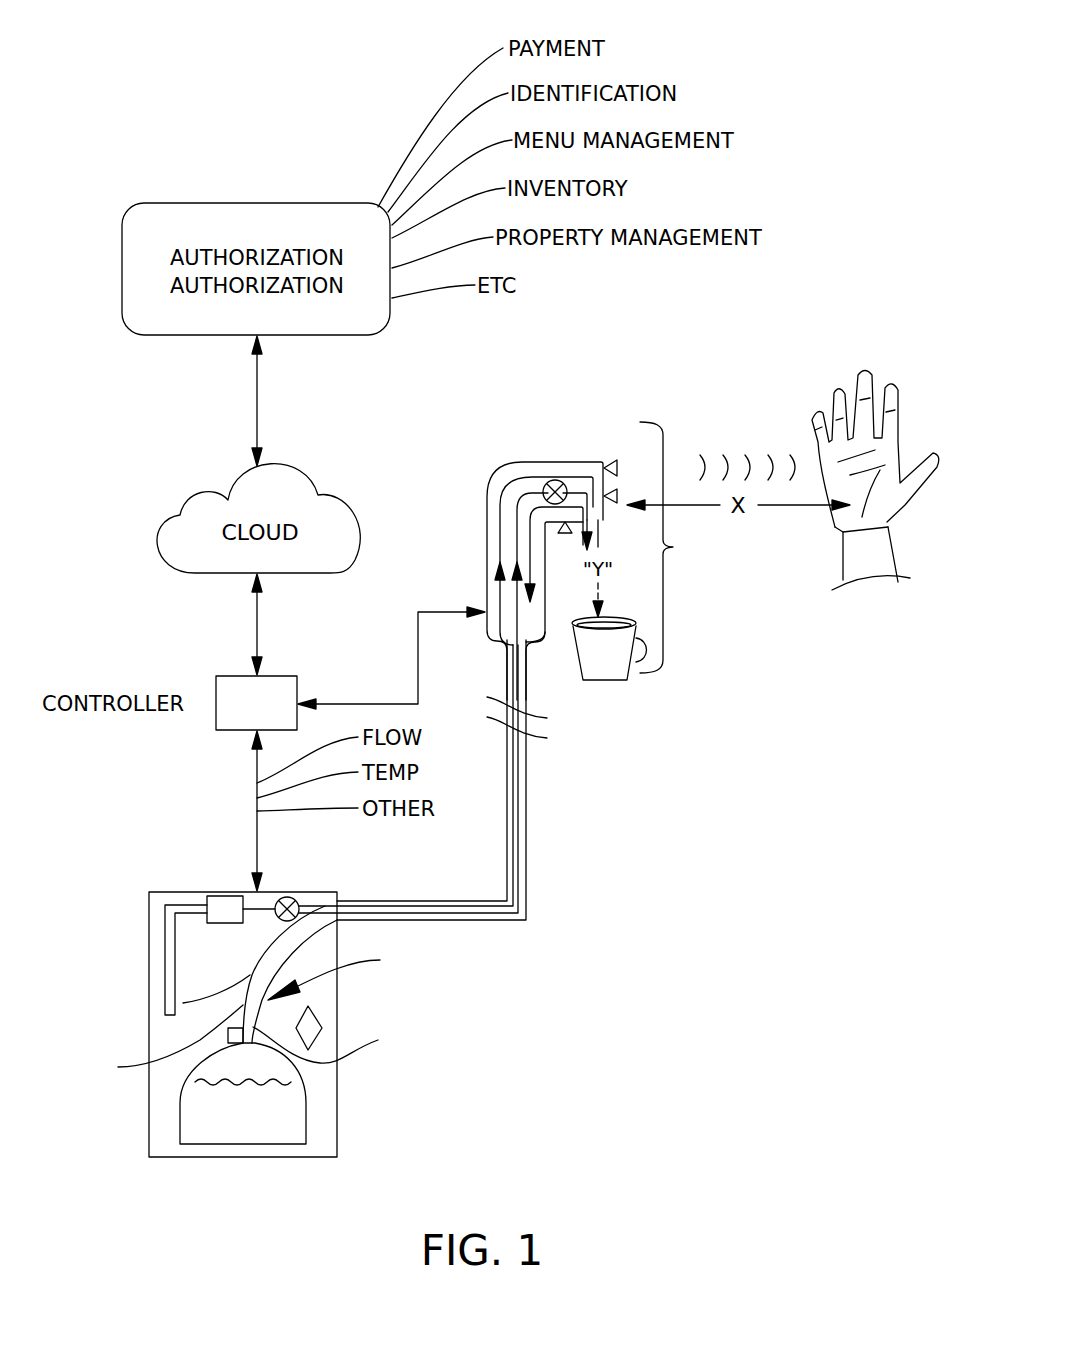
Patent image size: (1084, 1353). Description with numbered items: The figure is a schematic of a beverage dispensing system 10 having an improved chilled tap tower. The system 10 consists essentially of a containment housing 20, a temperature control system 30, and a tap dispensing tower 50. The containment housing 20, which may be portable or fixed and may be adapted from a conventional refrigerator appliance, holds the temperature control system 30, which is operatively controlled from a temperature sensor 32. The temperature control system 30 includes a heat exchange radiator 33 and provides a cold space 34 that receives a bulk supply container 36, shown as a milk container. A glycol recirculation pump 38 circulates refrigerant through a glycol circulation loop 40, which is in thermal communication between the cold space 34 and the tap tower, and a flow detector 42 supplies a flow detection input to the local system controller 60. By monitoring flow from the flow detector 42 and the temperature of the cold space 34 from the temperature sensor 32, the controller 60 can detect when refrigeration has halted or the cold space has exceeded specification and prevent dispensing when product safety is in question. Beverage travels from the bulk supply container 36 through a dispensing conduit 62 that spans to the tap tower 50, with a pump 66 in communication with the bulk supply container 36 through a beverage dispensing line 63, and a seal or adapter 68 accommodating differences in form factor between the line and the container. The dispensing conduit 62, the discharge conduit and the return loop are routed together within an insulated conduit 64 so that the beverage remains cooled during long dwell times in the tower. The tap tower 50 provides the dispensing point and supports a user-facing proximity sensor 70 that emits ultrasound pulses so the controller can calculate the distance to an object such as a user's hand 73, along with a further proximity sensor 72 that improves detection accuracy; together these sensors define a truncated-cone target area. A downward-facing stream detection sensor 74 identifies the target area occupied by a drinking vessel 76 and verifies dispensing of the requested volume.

The beverage dispensing system 10 is at (742, 768).
The containment housing 20 is at (337, 1100).
The temperature control system 30 is at (207, 897).
The temperature sensor 32 is at (322, 1027).
The heat exchange radiator 33 is at (165, 960).
The cold space 34 is at (339, 974).
The bulk supply container 36 is at (275, 1120).
The glycol recirculation pump 38 is at (226, 896).
The glycol circulation loop 40 is at (330, 900).
The flow detector 42 is at (293, 897).
The tap dispensing tower 50 is at (673, 547).
The local system controller 60 is at (256, 703).
The dispensing conduit 62 is at (543, 478).
The beverage dispensing line 63 is at (165, 1042).
The insulated conduit 64 is at (527, 790).
The pump 66 is at (563, 478).
The seal or adapter 68 is at (331, 1045).
The proximity sensor 70 is at (607, 477).
The proximity sensor 72 is at (607, 500).
The user hand 73 is at (888, 522).
The stream detection sensor 74 is at (557, 530).
The drinking vessel 76 is at (602, 660).